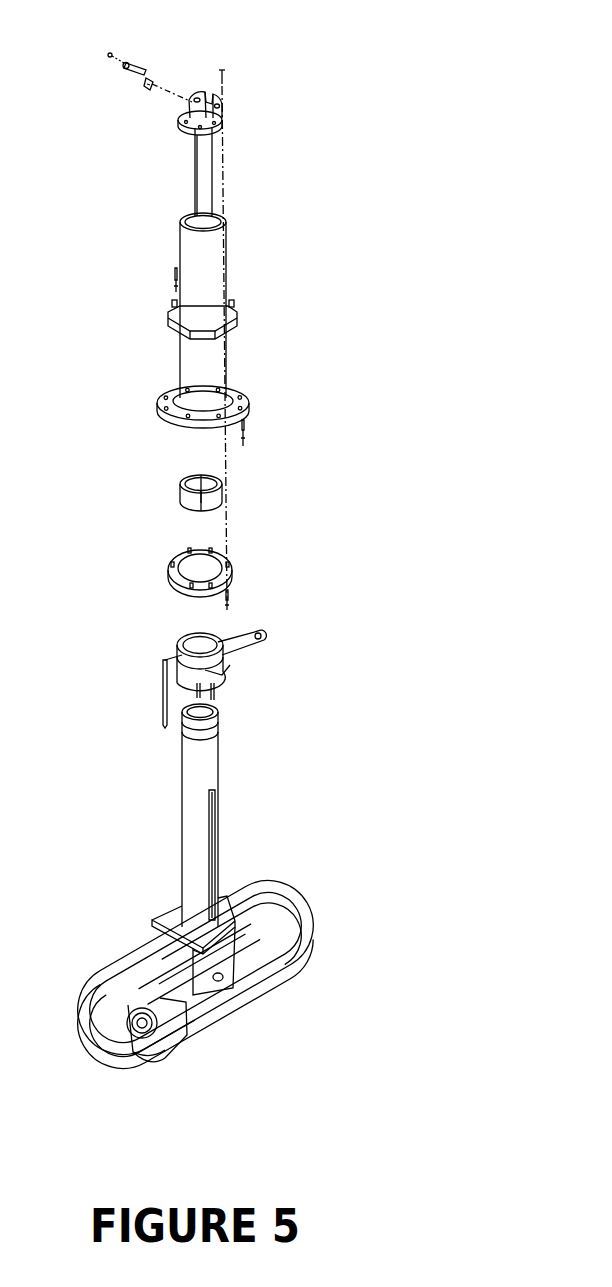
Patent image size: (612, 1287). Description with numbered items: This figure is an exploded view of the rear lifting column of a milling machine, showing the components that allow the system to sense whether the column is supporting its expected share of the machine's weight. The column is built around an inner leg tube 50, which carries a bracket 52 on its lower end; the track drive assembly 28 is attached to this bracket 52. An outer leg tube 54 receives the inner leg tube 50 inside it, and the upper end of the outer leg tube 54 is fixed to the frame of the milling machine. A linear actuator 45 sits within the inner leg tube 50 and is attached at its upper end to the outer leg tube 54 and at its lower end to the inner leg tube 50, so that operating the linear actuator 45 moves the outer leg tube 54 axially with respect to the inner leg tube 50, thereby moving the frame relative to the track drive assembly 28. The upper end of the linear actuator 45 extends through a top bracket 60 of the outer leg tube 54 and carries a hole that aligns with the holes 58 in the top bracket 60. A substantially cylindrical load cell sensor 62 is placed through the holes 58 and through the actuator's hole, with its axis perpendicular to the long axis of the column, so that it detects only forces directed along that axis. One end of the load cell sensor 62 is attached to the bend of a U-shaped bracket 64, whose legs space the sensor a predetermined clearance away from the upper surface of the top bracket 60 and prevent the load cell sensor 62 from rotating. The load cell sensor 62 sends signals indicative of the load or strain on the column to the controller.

The track drive assembly 28 is at (315, 917).
The linear actuator 45 is at (203, 200).
The inner leg tube 50 is at (220, 760).
The bracket 52 is at (228, 917).
The outer leg tube 54 is at (212, 275).
The holes 58 is at (222, 108).
The top bracket 60 is at (228, 122).
The load cell sensor 62 is at (145, 62).
The U-shaped bracket 64 is at (142, 95).